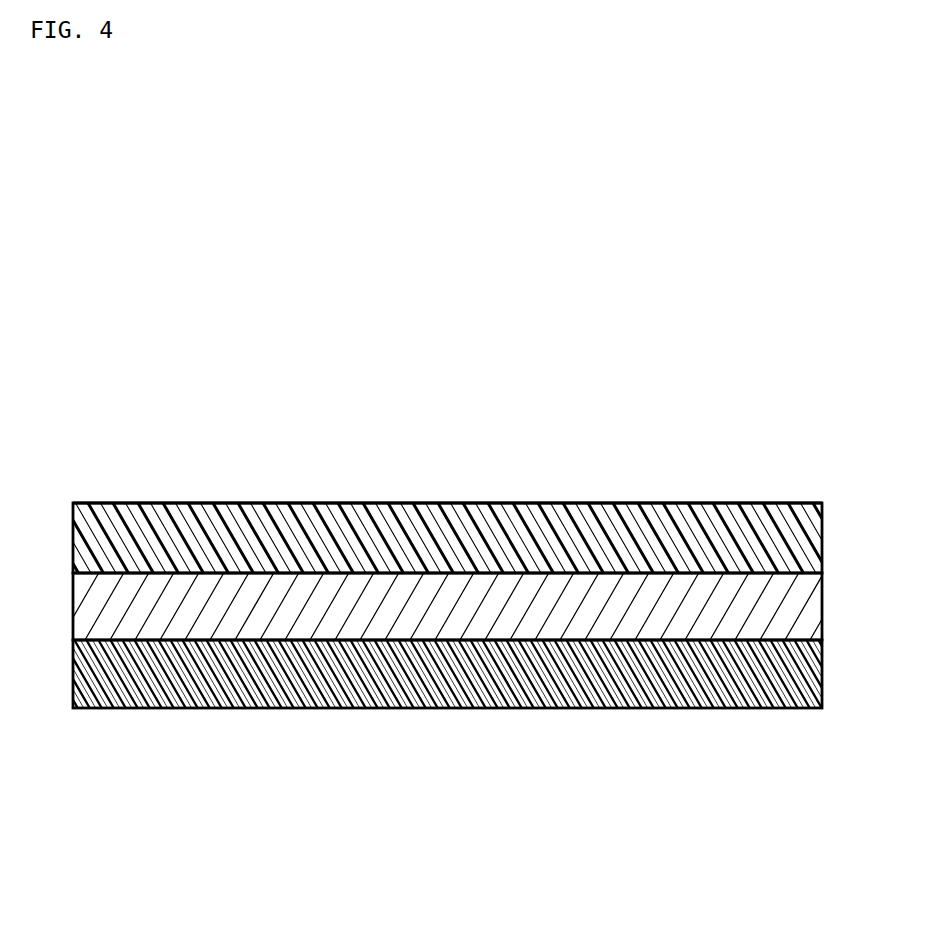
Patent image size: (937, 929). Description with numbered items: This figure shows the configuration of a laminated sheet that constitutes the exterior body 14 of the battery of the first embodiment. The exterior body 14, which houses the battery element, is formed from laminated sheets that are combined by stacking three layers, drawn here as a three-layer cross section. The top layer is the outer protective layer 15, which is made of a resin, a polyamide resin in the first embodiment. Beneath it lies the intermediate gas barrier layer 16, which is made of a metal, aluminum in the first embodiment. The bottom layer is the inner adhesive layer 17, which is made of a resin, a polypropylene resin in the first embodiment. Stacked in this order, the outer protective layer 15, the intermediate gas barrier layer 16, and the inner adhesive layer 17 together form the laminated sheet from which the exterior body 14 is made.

The exterior body 14 is at (245, 503).
The outer protective layer 15 is at (473, 503).
The intermediate gas barrier layer 16 is at (693, 573).
The inner adhesive layer 17 is at (298, 708).